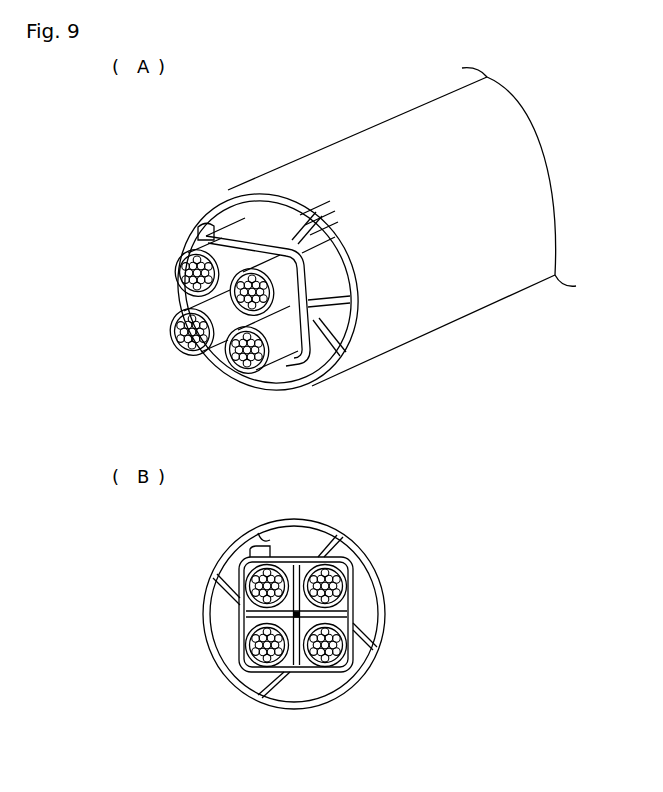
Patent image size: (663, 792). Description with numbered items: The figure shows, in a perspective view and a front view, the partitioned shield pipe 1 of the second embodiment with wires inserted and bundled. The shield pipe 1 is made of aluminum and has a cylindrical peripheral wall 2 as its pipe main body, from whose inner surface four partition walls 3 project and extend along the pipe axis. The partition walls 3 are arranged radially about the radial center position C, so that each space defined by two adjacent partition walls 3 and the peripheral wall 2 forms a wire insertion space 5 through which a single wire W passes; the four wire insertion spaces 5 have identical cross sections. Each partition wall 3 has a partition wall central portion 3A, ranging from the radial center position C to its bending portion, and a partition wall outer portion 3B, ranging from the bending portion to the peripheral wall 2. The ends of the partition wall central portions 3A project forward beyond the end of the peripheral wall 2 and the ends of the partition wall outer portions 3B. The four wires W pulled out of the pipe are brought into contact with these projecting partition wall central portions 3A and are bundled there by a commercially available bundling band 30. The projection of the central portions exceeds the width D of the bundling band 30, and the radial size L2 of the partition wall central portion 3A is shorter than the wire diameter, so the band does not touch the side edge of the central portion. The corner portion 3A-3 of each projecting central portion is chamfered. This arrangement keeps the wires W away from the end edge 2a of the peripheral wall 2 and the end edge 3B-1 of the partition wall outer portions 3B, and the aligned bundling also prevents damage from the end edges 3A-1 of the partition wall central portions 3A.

The partitioned shield pipe 1 is at (204, 153).
The peripheral wall 2 is at (258, 170).
The end edge of the peripheral wall 2a is at (262, 537).
The partition wall 3 is at (405, 546).
The partition wall central portion 3A is at (203, 228).
The end edge of the partition wall central portion 3A-1 is at (240, 620).
The corner portion 3A-3 is at (288, 562).
The partition wall outer portion 3B is at (293, 213).
The end edge of the partition wall outer portion 3B-1 is at (225, 583).
The wire insertion space 5 is at (238, 557).
The bundling band 30 is at (327, 344).
The wire W is at (208, 248).
The width of the bundling band D is at (276, 288).
The radial center position C is at (378, 660).
The size in the diameter direction of the partition wall central portion L2 is at (295, 672).